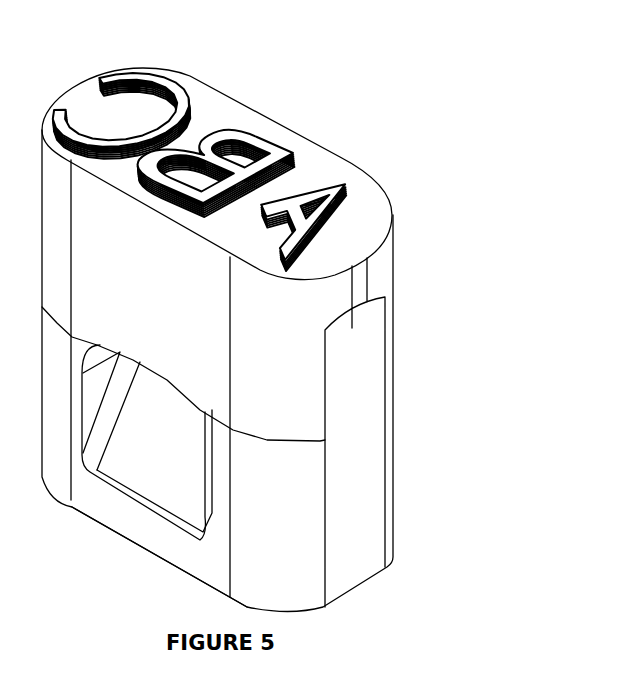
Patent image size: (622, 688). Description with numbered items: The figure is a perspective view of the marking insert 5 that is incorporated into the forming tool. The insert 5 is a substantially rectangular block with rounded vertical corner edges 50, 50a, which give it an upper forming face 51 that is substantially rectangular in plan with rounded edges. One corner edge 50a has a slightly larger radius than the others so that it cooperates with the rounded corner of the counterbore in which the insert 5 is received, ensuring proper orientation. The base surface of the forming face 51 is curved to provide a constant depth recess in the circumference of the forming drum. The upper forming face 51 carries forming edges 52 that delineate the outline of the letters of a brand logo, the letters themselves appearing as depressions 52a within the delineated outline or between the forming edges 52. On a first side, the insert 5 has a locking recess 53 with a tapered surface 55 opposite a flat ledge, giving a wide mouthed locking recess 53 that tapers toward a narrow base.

The marking insert 5 is at (215, 331).
The rounded vertical corner edge 50 is at (215, 353).
The rounded vertical corner edge of larger radius 50a is at (300, 390).
The upper forming face 51 is at (367, 250).
The forming edges 52 is at (229, 147).
The depressions 52a is at (283, 142).
The locking recess 53 is at (132, 563).
The tapered surface 55 is at (178, 463).